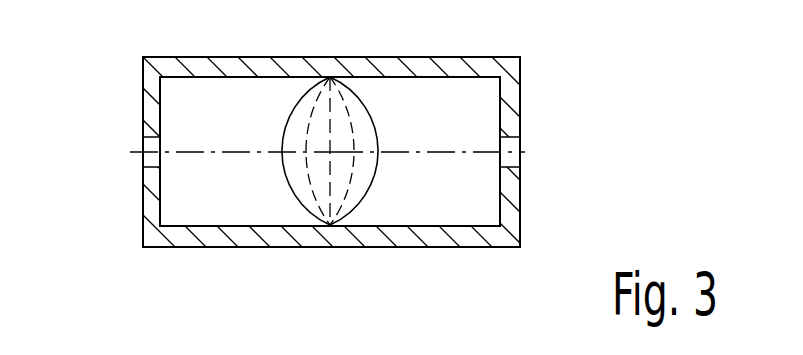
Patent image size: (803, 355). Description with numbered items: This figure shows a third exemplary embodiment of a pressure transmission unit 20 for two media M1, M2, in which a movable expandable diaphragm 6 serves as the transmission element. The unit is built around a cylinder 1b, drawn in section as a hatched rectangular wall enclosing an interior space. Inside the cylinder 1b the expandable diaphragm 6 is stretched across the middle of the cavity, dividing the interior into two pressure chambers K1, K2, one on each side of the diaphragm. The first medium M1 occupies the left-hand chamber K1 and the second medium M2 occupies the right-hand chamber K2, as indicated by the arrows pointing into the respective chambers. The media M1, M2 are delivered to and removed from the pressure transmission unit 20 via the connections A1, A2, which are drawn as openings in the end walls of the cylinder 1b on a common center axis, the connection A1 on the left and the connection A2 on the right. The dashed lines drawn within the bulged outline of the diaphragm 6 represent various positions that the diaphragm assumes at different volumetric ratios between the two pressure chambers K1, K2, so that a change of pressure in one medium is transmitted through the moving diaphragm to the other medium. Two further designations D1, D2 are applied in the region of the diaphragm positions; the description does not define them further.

The pressure transmission unit 20 is at (311, 50).
The expandable diaphragm 6 is at (286, 179).
The cylinder 1b is at (367, 237).
The connection A1 is at (132, 160).
The connection A2 is at (530, 160).
The medium M1 is at (200, 121).
The medium M2 is at (440, 115).
The pressure chamber K1 is at (203, 193).
The pressure chamber K2 is at (470, 180).
The first direction D1 is at (310, 208).
The second direction D2 is at (350, 170).